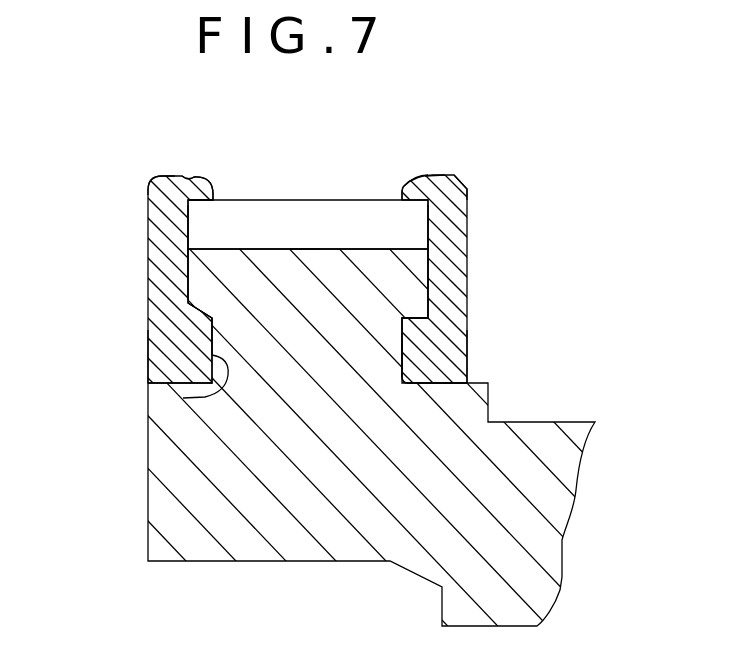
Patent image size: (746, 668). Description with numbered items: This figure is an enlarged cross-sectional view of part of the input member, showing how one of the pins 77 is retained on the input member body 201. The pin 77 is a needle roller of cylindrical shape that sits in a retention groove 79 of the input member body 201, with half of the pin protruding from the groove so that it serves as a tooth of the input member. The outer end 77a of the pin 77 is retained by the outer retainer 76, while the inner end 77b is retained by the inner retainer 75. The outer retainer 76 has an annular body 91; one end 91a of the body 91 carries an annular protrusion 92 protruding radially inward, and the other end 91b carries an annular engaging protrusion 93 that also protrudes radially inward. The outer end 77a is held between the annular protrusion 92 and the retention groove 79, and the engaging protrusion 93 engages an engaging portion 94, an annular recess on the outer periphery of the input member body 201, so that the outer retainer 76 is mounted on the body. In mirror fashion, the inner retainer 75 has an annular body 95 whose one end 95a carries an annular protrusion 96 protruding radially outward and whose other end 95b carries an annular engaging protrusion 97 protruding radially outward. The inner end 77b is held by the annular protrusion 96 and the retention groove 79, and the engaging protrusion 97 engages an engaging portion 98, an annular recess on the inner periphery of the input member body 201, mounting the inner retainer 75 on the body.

The inner retainer 75 is at (468, 217).
The outer retainer 76 is at (158, 227).
The pin 77 is at (265, 200).
The outer end of pin 77a is at (188, 177).
The inner end of pin 77b is at (430, 175).
The retention groove 79 is at (305, 248).
The body of outer retainer 91 is at (158, 273).
The one end of body 91a is at (153, 180).
The other end of body 91b is at (148, 362).
The annular protrusion 92 is at (198, 180).
The engaging protrusion 93 is at (183, 398).
The engaging portion 94 is at (212, 340).
The body of inner retainer 95 is at (467, 257).
The one end of body 95a is at (465, 176).
The other end of body 95b is at (467, 350).
The annular protrusion 96 is at (414, 181).
The engaging protrusion 97 is at (403, 345).
The engaging portion 98 is at (442, 321).
The input member body 201 is at (148, 442).